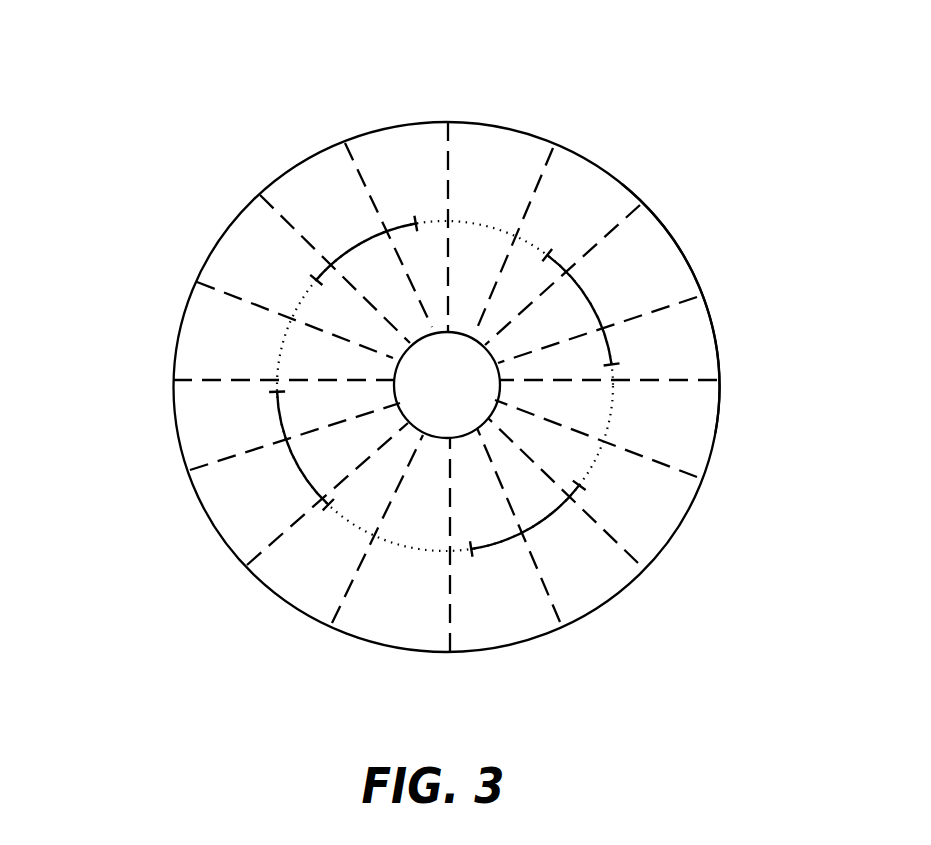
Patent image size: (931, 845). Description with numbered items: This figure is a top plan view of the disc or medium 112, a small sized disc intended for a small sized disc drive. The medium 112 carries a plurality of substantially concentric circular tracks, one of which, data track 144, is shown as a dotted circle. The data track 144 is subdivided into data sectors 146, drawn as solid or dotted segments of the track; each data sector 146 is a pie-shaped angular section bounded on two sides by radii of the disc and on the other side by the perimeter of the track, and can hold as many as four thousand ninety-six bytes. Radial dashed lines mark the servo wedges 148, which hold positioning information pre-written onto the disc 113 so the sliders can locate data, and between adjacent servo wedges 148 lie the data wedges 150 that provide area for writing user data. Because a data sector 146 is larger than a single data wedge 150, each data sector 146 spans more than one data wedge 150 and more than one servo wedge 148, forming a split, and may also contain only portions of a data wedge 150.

The disc or medium 112 is at (712, 178).
The disc 113 is at (670, 233).
The data track 144 is at (592, 469).
The data sectors 146 is at (283, 442).
The servo wedges 148 is at (353, 583).
The data wedges 150 is at (553, 230).